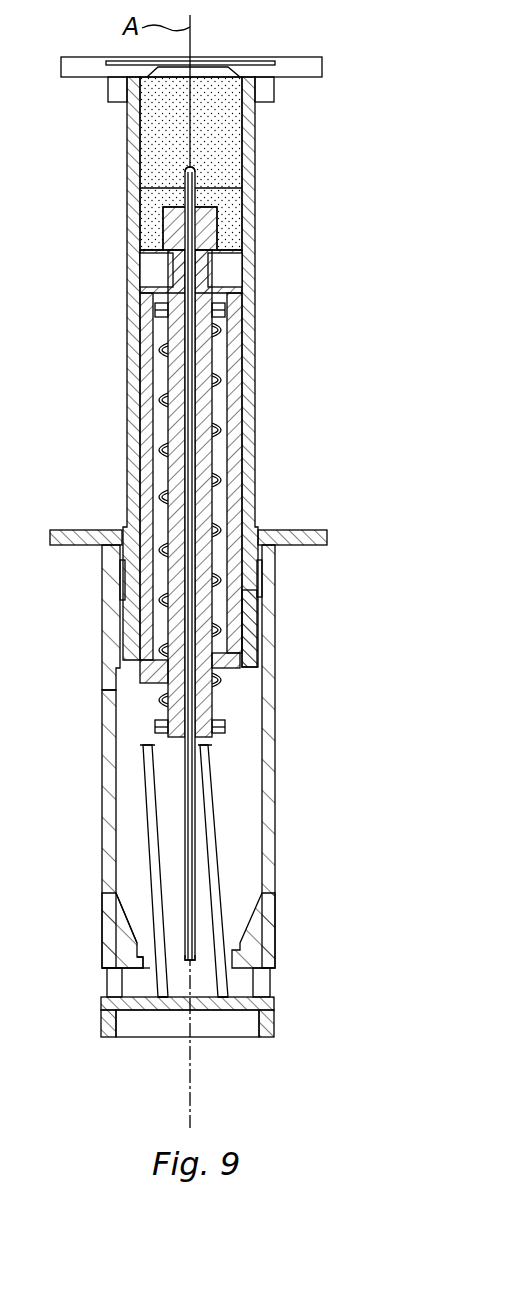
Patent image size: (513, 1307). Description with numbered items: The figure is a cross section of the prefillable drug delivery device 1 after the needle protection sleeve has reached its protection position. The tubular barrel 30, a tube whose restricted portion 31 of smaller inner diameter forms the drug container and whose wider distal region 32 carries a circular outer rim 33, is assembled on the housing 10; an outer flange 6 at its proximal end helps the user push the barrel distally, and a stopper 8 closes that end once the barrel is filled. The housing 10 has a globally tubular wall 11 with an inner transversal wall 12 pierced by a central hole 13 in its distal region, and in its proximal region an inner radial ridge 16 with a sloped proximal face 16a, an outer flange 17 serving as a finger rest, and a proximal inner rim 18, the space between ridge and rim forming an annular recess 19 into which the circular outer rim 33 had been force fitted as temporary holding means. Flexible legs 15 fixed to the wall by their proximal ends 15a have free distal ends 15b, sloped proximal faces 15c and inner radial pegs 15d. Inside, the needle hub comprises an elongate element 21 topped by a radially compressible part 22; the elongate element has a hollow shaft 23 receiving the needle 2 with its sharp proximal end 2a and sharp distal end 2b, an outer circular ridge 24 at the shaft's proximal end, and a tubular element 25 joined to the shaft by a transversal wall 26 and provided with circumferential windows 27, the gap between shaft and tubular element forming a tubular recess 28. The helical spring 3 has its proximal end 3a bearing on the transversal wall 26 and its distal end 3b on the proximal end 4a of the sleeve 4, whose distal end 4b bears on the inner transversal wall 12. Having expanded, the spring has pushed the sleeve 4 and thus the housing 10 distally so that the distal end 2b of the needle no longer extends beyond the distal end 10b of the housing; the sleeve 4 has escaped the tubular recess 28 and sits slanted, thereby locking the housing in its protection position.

The prefillable drug delivery device 1 is at (310, 140).
The needle 2 is at (277, 565).
The sharp proximal end 2a is at (195, 170).
The sharp distal end 2b is at (188, 968).
The helical spring 3 is at (261, 516).
The proximal end of the helical spring 3a is at (218, 312).
The distal end of the helical spring 3b is at (222, 737).
The sleeve 4 is at (190, 867).
The proximal end of the sleeve 4a is at (150, 742).
The distal end of the sleeve 4b is at (228, 993).
The outer flange 6 is at (300, 78).
The stopper 8 is at (165, 120).
The housing 10 is at (185, 774).
The distal end of the housing 10b is at (268, 1042).
The tubular wall 11 is at (103, 852).
The inner transversal wall 12 is at (221, 1048).
The central hole 13 is at (190, 1005).
The flexible leg 15 is at (276, 915).
The proximal end of the flexible leg 15a is at (103, 897).
The distal end of the flexible leg 15b is at (107, 963).
The sloped proximal face 15c is at (130, 905).
The inner radial peg 15d is at (150, 972).
The inner radial ridge 16 is at (115, 628).
The sloped proximal face 16a is at (122, 590).
The outer flange 17 is at (75, 540).
The proximal inner rim 18 is at (265, 562).
The annular recess 19 is at (258, 582).
The elongate element 21 is at (132, 465).
The radially compressible part 22 is at (192, 265).
The hollow shaft 23 is at (200, 500).
The outer circular ridge 24 is at (165, 228).
The tubular element 25 is at (148, 420).
The transversal wall 26 is at (167, 300).
The circumferential windows 27 is at (140, 668).
The tubular recess 28 is at (213, 422).
The tubular barrel 30 is at (285, 272).
The restricted portion 31 is at (247, 362).
The distal region 32 is at (247, 627).
The circular outer rim 33 is at (250, 652).